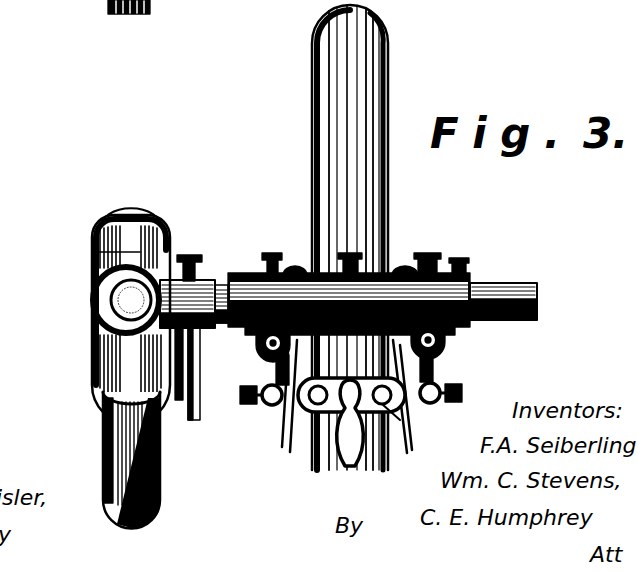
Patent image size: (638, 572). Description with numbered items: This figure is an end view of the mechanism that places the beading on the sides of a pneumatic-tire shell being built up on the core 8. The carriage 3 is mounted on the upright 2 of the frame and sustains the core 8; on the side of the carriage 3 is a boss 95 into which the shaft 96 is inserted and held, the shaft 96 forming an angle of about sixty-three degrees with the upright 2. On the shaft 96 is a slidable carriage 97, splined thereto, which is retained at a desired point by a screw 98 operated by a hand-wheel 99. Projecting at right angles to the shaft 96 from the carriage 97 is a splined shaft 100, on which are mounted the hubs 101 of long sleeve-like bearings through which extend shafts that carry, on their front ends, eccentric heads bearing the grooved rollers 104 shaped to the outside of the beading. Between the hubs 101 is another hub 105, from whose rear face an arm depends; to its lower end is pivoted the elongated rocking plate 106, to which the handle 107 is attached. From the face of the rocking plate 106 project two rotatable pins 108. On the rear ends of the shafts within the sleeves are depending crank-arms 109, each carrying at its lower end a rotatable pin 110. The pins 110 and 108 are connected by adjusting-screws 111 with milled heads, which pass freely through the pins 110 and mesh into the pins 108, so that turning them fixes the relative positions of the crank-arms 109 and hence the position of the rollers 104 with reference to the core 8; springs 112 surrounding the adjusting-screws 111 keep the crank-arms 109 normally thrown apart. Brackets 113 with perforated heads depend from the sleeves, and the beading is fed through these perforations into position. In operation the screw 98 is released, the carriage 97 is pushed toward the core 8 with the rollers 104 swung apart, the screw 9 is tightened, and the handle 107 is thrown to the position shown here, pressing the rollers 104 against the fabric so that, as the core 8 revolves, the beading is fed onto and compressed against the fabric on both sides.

The core 8 is at (316, 78).
The carriage 3 is at (95, 350).
The hand-wheel 99 is at (106, 224).
The screw 98 is at (100, 253).
The slidable carriage 97 is at (100, 318).
The boss 95 is at (100, 302).
The shaft 96 is at (129, 298).
The splined shaft 100 is at (537, 298).
The hubs 101 is at (255, 265).
The rollers 104 is at (295, 266).
The hub 105 is at (390, 245).
The crank-arms 109 is at (354, 351).
The brackets 113 is at (264, 344).
The springs 112 is at (290, 402).
The rotatable pins 108 is at (306, 408).
The adjusting-screws 111 is at (240, 395).
The rotatable pins 110 is at (266, 404).
The handle 107 is at (350, 468).
The rocking plate 106 is at (405, 436).
The screw 9 is at (185, 389).
The upright 2 is at (100, 475).